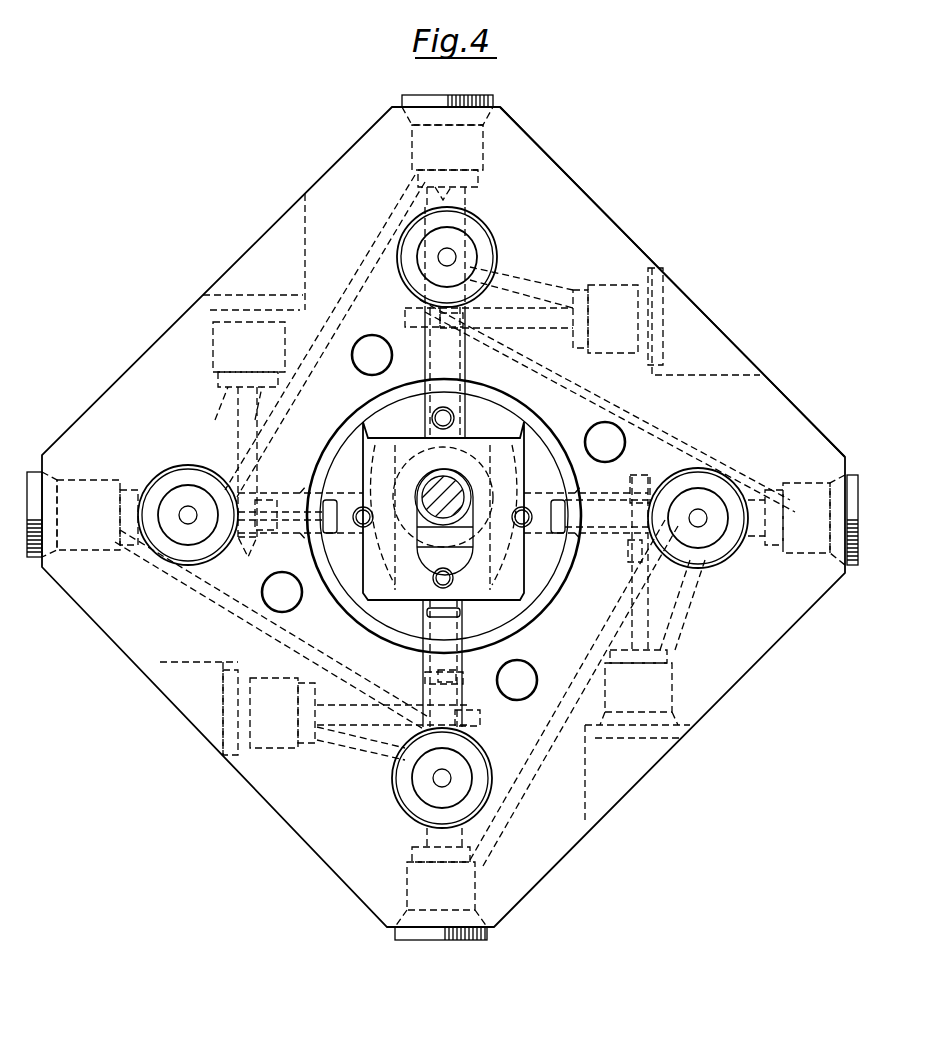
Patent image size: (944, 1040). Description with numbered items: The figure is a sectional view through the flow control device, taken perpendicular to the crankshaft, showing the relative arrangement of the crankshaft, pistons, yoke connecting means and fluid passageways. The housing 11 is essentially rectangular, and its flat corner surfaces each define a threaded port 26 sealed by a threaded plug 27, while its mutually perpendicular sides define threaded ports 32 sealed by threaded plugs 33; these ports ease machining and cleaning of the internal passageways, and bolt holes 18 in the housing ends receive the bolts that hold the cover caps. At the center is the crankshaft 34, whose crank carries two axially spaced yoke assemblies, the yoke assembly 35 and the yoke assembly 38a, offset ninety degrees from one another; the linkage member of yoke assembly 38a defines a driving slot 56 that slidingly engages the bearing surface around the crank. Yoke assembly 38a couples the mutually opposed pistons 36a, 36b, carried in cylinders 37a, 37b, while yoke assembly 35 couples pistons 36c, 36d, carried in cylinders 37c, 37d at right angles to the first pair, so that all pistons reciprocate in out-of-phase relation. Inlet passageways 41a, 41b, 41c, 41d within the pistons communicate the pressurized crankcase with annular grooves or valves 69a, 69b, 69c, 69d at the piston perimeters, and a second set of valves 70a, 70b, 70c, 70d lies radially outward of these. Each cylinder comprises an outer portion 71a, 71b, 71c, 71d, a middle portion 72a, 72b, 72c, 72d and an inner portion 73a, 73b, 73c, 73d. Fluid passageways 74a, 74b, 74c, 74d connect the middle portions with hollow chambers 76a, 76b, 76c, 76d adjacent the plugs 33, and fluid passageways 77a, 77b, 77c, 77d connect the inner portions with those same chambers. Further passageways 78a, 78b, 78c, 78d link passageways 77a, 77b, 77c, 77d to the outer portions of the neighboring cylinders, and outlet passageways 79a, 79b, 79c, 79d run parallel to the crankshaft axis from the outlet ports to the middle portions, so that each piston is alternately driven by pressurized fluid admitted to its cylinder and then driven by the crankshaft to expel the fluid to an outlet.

The housing 11 is at (612, 215).
The bolt holes 18 is at (376, 376).
The threaded port 26 is at (432, 97).
The threaded plug 27 is at (470, 96).
The threaded ports 32 is at (262, 238).
The threaded plugs 33 is at (240, 296).
The crankshaft 34 is at (572, 452).
The yoke assembly 35 is at (510, 590).
The piston 36a is at (466, 362).
The piston 36b is at (462, 688).
The piston 36c is at (600, 533).
The piston 36d is at (308, 540).
The cylinder 37a is at (466, 380).
The cylinder 37b is at (462, 702).
The cylinder 37c is at (565, 540).
The cylinder 37d is at (312, 497).
The yoke assembly 38a is at (360, 406).
The inlet passageway 41a is at (430, 350).
The inlet passageway 41b is at (455, 636).
The inlet passageway 41c is at (590, 506).
The inlet passageway 41d is at (292, 530).
The driving slot 56 is at (480, 445).
The annular groove or valve 69a is at (440, 322).
The annular groove or valve 69b is at (425, 677).
The valve 69c is at (632, 560).
The valve 69d is at (270, 560).
The annular groove or valve 70a is at (486, 216).
The annular groove or valve 70b is at (486, 752).
The valve 70c is at (736, 550).
The valve 70d is at (165, 470).
The outer portion of cylinder 71a is at (412, 142).
The outer portion of cylinder 71b is at (472, 886).
The outer portion of cylinder 71c is at (798, 487).
The outer portion of cylinder 71d is at (97, 553).
The middle portion of cylinder 72a is at (476, 249).
The middle portion of cylinder 72b is at (472, 778).
The middle portion of cylinder 72c is at (718, 496).
The middle portion of cylinder 72d is at (203, 543).
The inner portion of cylinder 73a is at (420, 308).
The inner portion of cylinder 73b is at (480, 714).
The inner portion of cylinder 73c is at (648, 480).
The inner portion of cylinder 73d is at (252, 508).
The fluid passageway 74a is at (533, 290).
The fluid passageway 74b is at (355, 748).
The fluid passageway 74c is at (672, 633).
The fluid passageway 74d is at (215, 410).
The hollow chamber 76a is at (625, 290).
The hollow chamber 76b is at (288, 752).
The hollow chamber 76c is at (660, 694).
The hollow chamber 76d is at (225, 336).
The fluid passageway 77a is at (505, 328).
The fluid passageway 77b is at (416, 705).
The fluid passageway 77c is at (660, 620).
The fluid passageway 77d is at (258, 468).
The fluid passageway 78a is at (632, 400).
The fluid passageway 78b is at (290, 632).
The fluid passageway 78c is at (585, 652).
The fluid passageway 78d is at (343, 300).
The outlet passageway 79a is at (456, 257).
The outlet passageway 79b is at (433, 779).
The outlet passageway 79c is at (707, 517).
The outlet passageway 79d is at (183, 523).